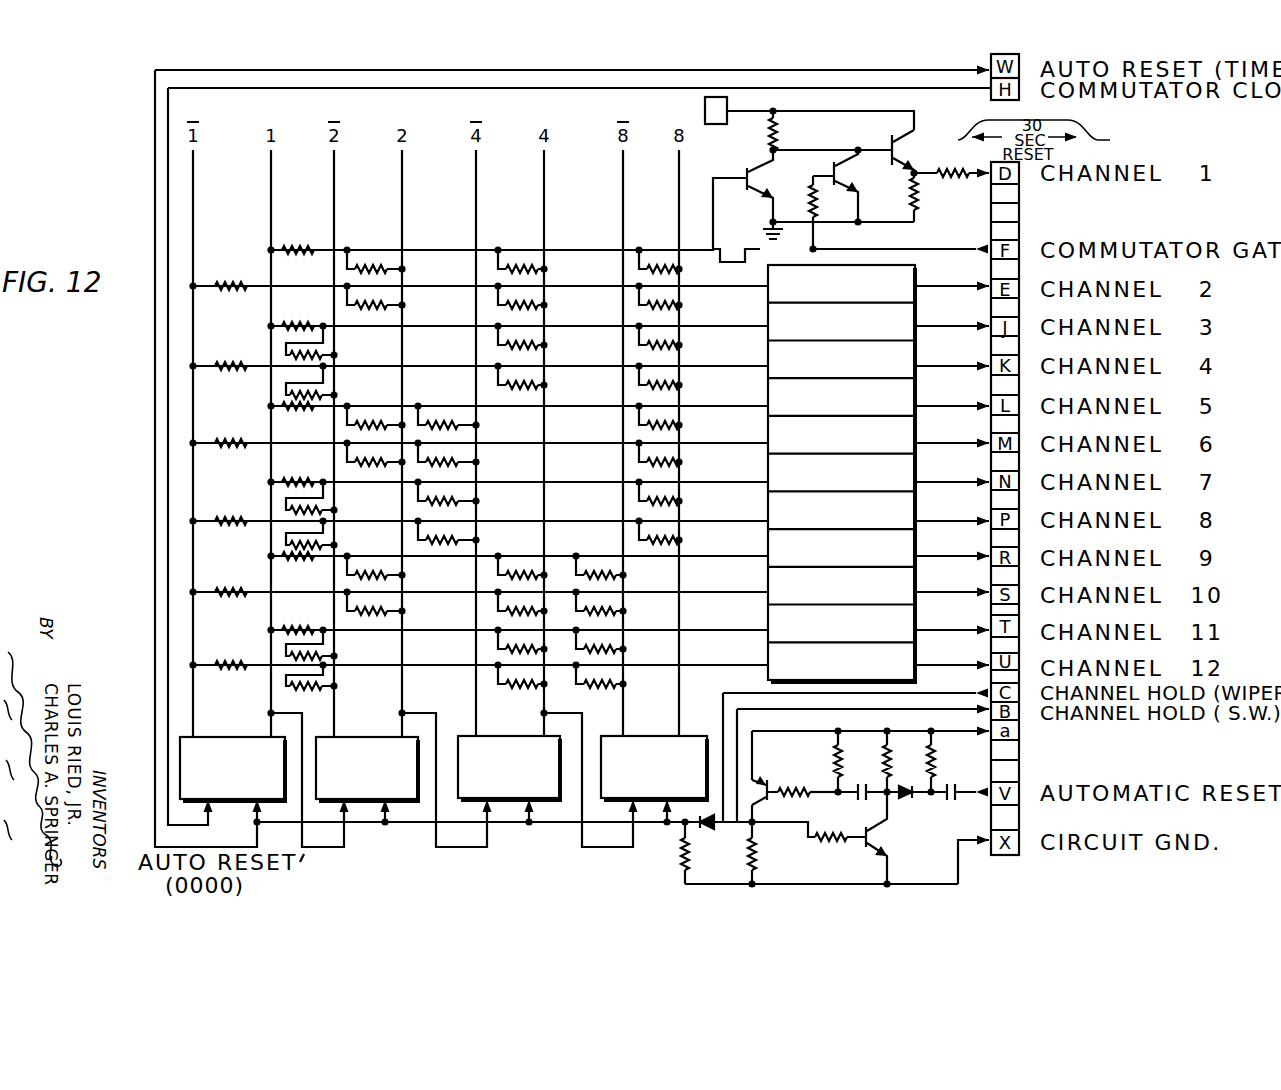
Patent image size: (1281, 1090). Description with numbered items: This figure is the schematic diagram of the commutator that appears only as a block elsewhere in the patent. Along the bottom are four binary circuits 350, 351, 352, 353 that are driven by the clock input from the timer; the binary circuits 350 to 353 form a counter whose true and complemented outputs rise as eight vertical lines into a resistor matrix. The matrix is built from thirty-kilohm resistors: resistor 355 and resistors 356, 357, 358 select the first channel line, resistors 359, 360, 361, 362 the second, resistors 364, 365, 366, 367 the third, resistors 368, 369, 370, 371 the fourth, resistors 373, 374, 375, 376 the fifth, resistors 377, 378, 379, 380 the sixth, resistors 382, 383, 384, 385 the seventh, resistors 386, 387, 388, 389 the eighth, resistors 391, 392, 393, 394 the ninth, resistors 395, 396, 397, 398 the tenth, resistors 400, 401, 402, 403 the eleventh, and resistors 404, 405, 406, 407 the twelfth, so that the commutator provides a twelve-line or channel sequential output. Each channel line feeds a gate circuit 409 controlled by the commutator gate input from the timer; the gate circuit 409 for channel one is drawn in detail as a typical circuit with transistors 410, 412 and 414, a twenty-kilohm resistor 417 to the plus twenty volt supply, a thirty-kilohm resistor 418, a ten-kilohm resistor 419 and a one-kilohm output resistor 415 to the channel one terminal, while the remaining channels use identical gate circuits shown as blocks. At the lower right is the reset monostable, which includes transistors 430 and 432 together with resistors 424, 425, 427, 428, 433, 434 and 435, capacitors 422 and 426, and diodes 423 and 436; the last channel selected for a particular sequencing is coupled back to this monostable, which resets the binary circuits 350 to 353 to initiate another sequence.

The binary circuit 350 is at (256, 728).
The binary circuit 351 is at (394, 728).
The binary circuit 352 is at (526, 732).
The binary circuit 353 is at (674, 729).
The resistor 355 is at (322, 240).
The resistor 356 is at (382, 260).
The resistor 357 is at (524, 260).
The resistor 358 is at (655, 258).
The resistor 359 is at (238, 262).
The resistor 360 is at (382, 296).
The resistor 361 is at (524, 296).
The resistor 362 is at (660, 296).
The resistor 364 is at (296, 325).
The resistor 365 is at (323, 357).
The resistor 366 is at (524, 336).
The resistor 367 is at (660, 336).
The resistor 368 is at (223, 362).
The resistor 369 is at (323, 397).
The resistor 370 is at (524, 376).
The resistor 371 is at (660, 376).
The resistor 373 is at (321, 412).
The resistor 374 is at (398, 417).
The resistor 375 is at (458, 416).
The resistor 376 is at (660, 415).
The resistor 377 is at (226, 440).
The resistor 378 is at (383, 468).
The resistor 379 is at (458, 453).
The resistor 380 is at (660, 452).
The resistor 382 is at (299, 483).
The resistor 383 is at (294, 516).
The resistor 384 is at (458, 492).
The resistor 385 is at (660, 491).
The resistor 386 is at (209, 522).
The resistor 387 is at (290, 545).
The resistor 388 is at (458, 531).
The resistor 389 is at (660, 530).
The resistor 391 is at (310, 562).
The resistor 392 is at (382, 565).
The resistor 393 is at (530, 570).
The resistor 394 is at (604, 566).
The resistor 395 is at (225, 592).
The resistor 396 is at (382, 602).
The resistor 397 is at (508, 615).
The resistor 398 is at (604, 602).
The resistor 400 is at (304, 630).
The resistor 401 is at (293, 665).
The resistor 402 is at (508, 650).
The resistor 403 is at (604, 640).
The resistor 404 is at (218, 660).
The resistor 405 is at (283, 694).
The resistor 406 is at (524, 688).
The resistor 407 is at (612, 688).
The gate circuit 409 is at (926, 150).
The transistor 410 is at (756, 168).
The transistor 412 is at (842, 162).
The transistor 414 is at (897, 136).
The resistor 415 is at (950, 183).
The resistor 417 is at (781, 128).
The resistor 418 is at (838, 200).
The resistor 419 is at (920, 198).
The capacitor 422 is at (948, 806).
The diode 423 is at (913, 800).
The resistor 424 is at (925, 763).
The resistor 425 is at (875, 763).
The capacitor 426 is at (863, 803).
The resistor 427 is at (828, 763).
The resistor 428 is at (808, 801).
The transistor 430 is at (778, 769).
The transistor 432 is at (885, 837).
The resistor 433 is at (829, 838).
The resistor 434 is at (785, 843).
The resistor 435 is at (710, 841).
The diode 436 is at (707, 824).